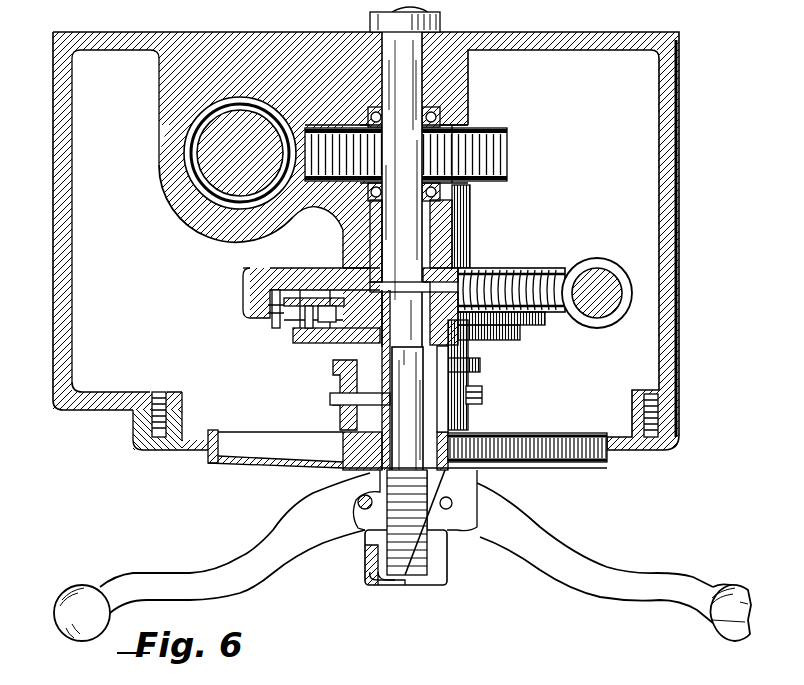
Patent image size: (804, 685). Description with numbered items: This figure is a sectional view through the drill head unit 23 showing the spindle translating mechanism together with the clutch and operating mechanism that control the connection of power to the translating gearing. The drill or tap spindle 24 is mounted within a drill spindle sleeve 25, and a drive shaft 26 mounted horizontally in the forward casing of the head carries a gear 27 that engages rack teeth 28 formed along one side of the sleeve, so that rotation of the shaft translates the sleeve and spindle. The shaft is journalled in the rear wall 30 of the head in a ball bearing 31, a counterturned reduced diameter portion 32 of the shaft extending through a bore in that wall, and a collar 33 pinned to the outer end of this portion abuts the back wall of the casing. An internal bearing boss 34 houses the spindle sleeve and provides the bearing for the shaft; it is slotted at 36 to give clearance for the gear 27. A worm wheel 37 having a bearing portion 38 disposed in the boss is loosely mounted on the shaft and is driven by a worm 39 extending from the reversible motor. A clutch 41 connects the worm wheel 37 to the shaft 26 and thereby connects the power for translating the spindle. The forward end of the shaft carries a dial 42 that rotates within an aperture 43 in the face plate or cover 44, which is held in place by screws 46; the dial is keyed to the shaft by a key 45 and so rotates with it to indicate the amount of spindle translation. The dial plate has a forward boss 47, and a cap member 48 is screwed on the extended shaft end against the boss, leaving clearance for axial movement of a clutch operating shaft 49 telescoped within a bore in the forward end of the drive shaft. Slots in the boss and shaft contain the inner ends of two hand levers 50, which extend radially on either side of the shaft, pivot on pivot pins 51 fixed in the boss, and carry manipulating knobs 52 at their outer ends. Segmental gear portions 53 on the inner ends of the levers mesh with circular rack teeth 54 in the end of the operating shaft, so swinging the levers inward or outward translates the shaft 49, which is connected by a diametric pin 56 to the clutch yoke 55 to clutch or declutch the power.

The drill head unit 23 is at (61, 401).
The drill or tap spindle 24 is at (207, 165).
The drill spindle sleeve 25 is at (186, 222).
The drive shaft 26 is at (405, 60).
The gear 27 is at (508, 152).
The rack teeth 28 is at (278, 98).
The rear wall 30 is at (511, 35).
The ball bearing 31 is at (441, 113).
The reduced diameter portion 32 is at (441, 34).
The collar 33 is at (370, 21).
The bearing boss 34 is at (256, 242).
The slot 36 is at (462, 129).
The worm wheel 37 is at (513, 270).
The bearing portion 38 is at (453, 241).
The worm 39 is at (596, 260).
The clutch 41 is at (283, 336).
The dial 42 is at (547, 431).
The aperture 43 is at (205, 456).
The face plate or cover 44 is at (617, 452).
The key 45 is at (461, 443).
The screws 46 is at (657, 447).
The forward boss 47 is at (470, 495).
The cap member 48 is at (448, 576).
The clutch operating shaft 49 is at (405, 418).
The hand levers 50 is at (275, 531).
The pivot pins 51 is at (365, 512).
The manipulating knobs 52 is at (85, 590).
The segmental gear portions 53 is at (414, 535).
The circular rack teeth 54 is at (390, 584).
The clutch yoke 55 is at (471, 206).
The diametric pin 56 is at (331, 396).